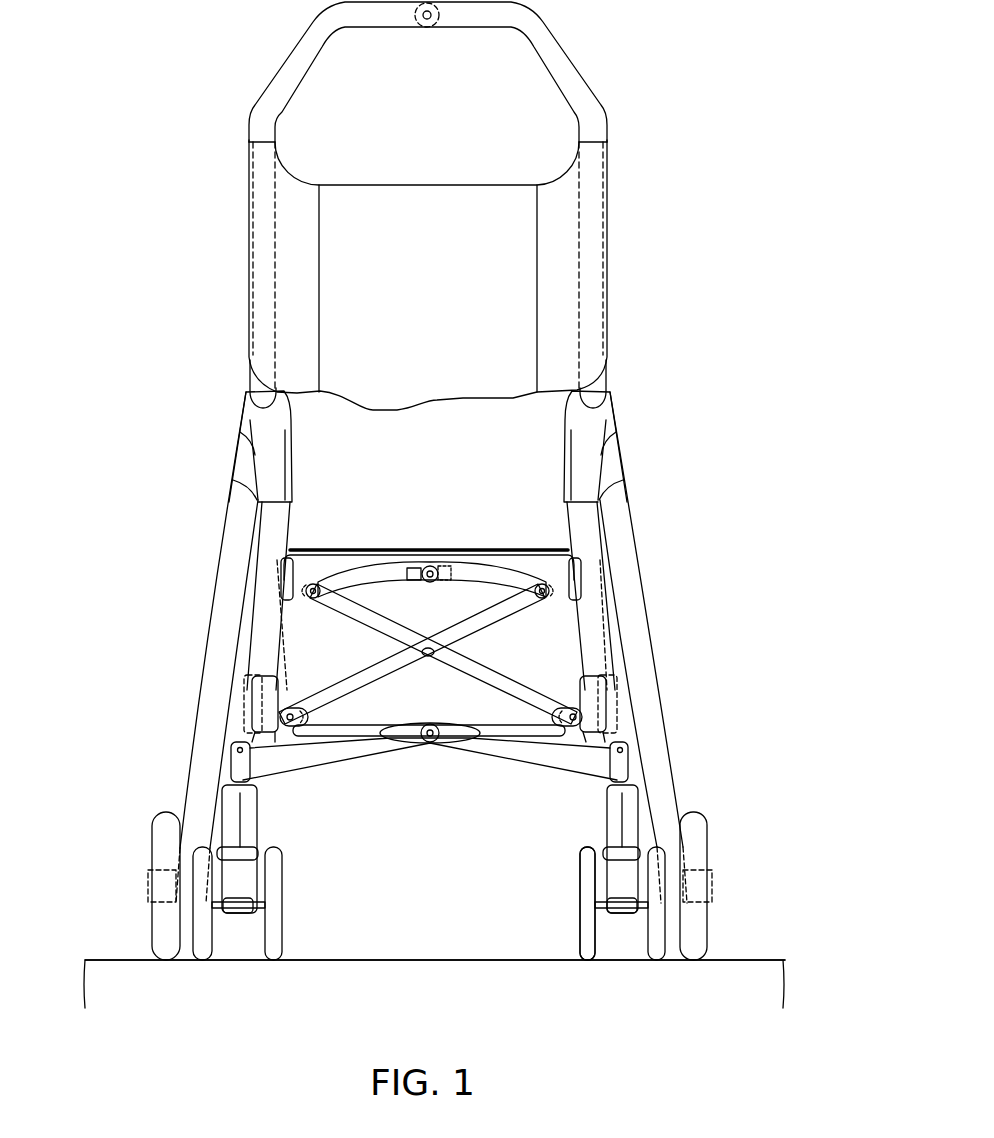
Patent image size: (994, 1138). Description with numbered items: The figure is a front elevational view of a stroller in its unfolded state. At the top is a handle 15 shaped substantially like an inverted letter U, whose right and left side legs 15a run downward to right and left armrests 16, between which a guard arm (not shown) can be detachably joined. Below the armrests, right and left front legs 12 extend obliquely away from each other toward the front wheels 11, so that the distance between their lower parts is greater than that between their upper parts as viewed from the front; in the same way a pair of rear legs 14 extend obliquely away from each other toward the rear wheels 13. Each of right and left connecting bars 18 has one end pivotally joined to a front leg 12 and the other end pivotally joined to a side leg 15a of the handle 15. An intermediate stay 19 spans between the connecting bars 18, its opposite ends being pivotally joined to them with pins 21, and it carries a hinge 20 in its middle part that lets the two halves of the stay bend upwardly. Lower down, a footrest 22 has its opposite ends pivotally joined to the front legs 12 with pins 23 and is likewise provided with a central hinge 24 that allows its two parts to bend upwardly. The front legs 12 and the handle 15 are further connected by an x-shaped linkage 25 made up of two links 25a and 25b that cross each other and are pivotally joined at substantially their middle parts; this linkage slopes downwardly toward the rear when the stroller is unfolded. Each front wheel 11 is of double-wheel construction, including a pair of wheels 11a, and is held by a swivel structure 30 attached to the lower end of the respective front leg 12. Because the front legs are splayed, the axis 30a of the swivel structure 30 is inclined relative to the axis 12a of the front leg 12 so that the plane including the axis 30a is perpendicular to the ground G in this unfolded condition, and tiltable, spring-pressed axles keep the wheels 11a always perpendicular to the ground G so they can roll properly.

The front wheel 11 is at (283, 886).
The wheels 11a is at (582, 927).
The front leg 12 is at (262, 590).
The axis of the front leg 12a is at (605, 631).
The rear wheel 13 is at (163, 837).
The rear leg 14 is at (205, 712).
The handle 15 is at (597, 92).
The side leg 15a is at (598, 383).
The armrest 16 is at (267, 455).
The connecting bar 18 is at (305, 585).
The intermediate stay 19 is at (383, 572).
The hinge 20 is at (432, 566).
The pin 21 is at (313, 583).
The footrest 22 is at (353, 746).
The pin 23 is at (233, 750).
The hinge 24 is at (438, 742).
The x-shaped linkage 25 is at (418, 672).
The link 25a is at (480, 625).
The link 25b is at (385, 625).
The swivel structure 30 is at (243, 817).
The axis of the swivel structure 30a is at (623, 803).
The ground G is at (768, 958).